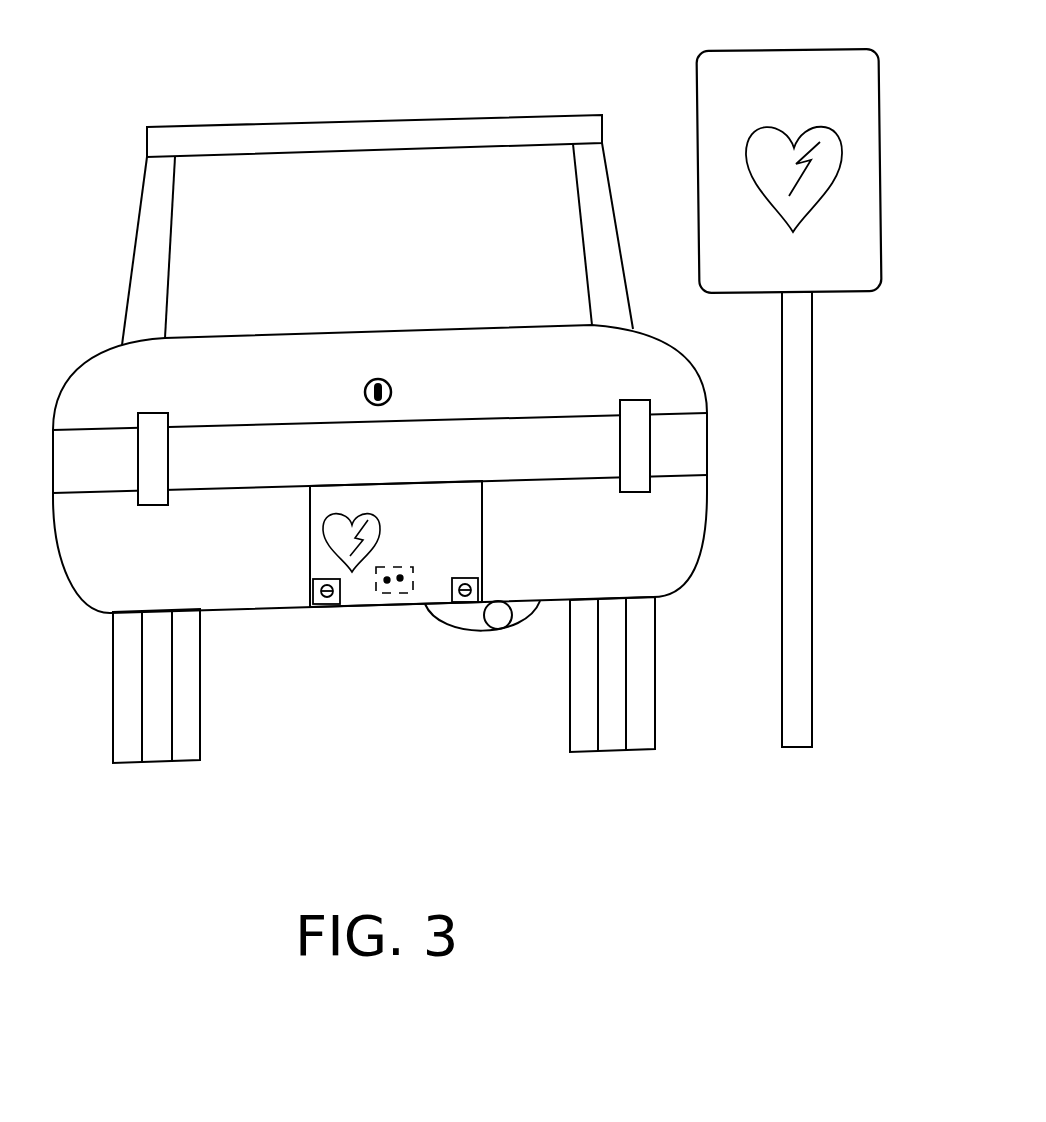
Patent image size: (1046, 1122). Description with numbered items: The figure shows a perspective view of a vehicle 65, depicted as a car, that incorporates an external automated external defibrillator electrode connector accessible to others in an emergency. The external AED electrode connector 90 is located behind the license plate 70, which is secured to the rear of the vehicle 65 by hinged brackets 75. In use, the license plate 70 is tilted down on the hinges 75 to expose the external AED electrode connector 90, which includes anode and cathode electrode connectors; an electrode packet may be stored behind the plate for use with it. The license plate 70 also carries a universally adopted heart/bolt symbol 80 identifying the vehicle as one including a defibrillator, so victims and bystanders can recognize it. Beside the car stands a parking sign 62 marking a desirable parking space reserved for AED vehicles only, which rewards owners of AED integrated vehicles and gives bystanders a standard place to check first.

The parking spot marker for AED vehicles 62 is at (846, 49).
The vehicle 65 is at (505, 117).
The license plate 70 is at (482, 522).
The hinged brackets 75 is at (312, 598).
The heart/bolt symbol 80 is at (323, 514).
The external AED electrode connector 90 is at (388, 593).